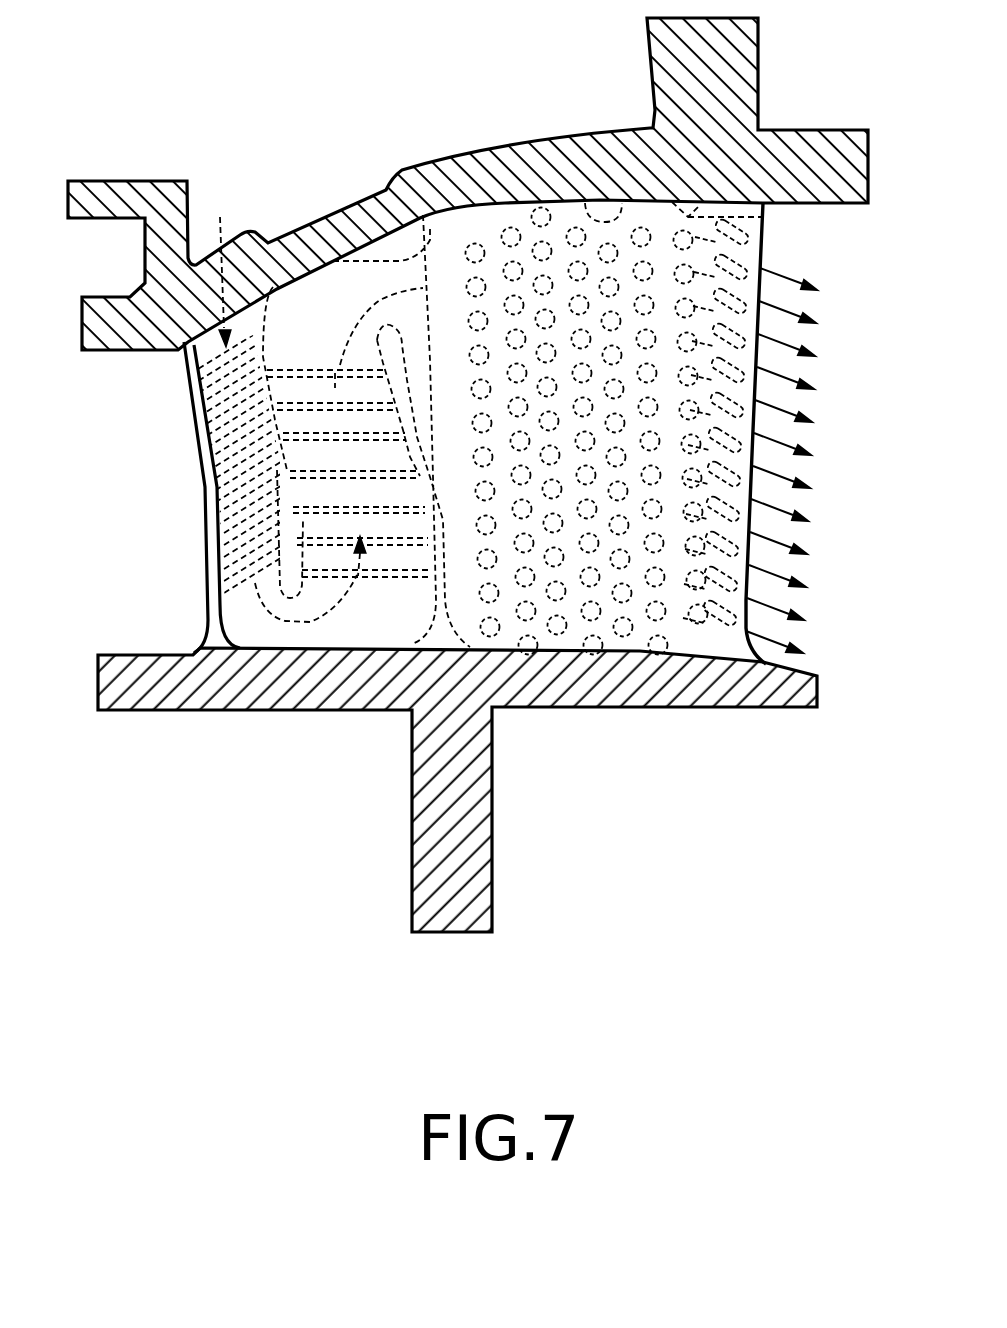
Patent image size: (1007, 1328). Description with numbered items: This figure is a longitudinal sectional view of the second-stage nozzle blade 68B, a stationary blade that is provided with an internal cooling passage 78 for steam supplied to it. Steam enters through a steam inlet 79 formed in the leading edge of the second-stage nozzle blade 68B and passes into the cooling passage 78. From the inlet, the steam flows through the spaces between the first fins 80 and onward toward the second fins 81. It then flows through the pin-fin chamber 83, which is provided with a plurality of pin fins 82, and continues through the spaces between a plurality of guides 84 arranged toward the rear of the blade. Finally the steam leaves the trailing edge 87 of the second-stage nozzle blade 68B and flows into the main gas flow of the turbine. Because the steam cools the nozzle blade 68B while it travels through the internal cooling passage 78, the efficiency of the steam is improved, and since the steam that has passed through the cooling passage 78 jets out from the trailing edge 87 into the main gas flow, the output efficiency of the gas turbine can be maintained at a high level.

The second-stage nozzle blade 68B is at (423, 148).
The internal cooling passage 78 is at (386, 600).
The steam inlet 79 is at (253, 336).
The first fins 80 is at (227, 510).
The second fins 81 is at (313, 440).
The pin fins 82 is at (538, 362).
The pin-fin chamber 83 is at (688, 215).
The guides 84 is at (765, 238).
The trailing edge 87 is at (757, 318).